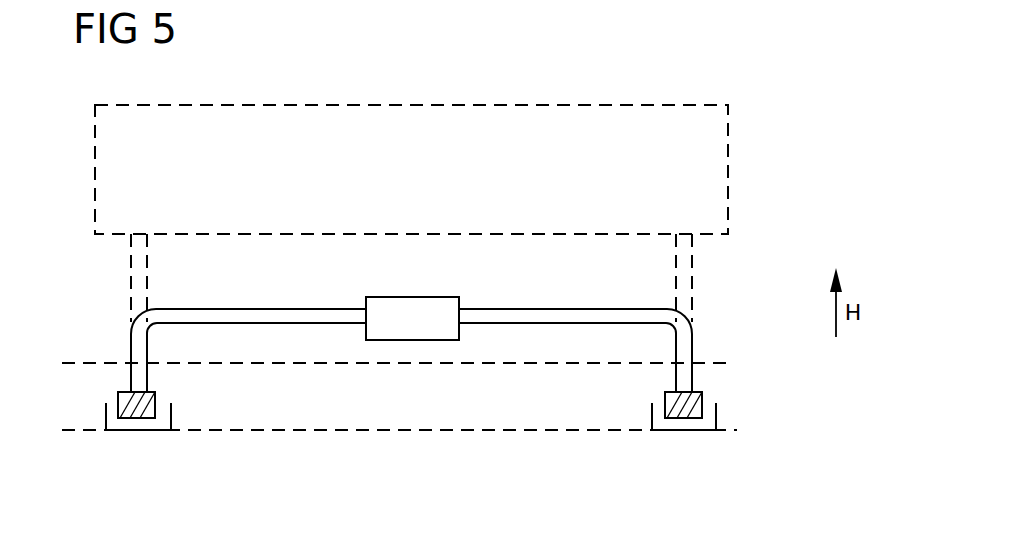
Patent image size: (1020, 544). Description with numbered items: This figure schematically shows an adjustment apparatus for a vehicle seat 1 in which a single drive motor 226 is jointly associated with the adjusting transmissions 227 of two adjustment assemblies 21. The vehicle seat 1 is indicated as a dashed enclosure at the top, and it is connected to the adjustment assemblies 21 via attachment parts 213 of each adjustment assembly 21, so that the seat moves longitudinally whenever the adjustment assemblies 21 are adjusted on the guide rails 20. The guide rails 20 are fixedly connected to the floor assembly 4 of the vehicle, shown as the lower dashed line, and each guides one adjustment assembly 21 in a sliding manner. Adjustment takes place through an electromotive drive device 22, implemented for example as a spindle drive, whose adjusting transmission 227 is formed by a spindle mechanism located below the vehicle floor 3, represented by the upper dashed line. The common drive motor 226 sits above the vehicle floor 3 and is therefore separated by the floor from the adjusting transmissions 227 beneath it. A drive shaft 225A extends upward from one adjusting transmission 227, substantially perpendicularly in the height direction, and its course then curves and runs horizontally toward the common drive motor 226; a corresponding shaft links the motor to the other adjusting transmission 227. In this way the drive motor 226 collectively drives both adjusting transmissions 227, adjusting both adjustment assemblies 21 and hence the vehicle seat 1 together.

The vehicle seat 1 is at (740, 165).
The attachment parts 213 is at (133, 275).
The drive shaft 225A is at (280, 313).
The electromotive drive device 22 is at (553, 315).
The drive motor 226 is at (414, 312).
The vehicle floor 3 is at (425, 339).
The floor assembly 4 is at (433, 408).
The adjustment assembly 21 is at (117, 400).
The adjusting transmission 227 is at (140, 407).
The guide rails 20 is at (147, 432).